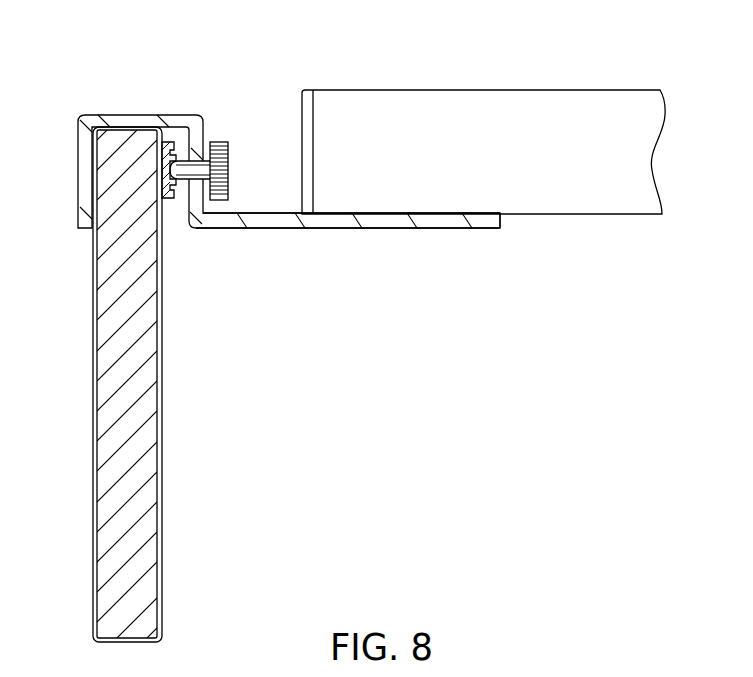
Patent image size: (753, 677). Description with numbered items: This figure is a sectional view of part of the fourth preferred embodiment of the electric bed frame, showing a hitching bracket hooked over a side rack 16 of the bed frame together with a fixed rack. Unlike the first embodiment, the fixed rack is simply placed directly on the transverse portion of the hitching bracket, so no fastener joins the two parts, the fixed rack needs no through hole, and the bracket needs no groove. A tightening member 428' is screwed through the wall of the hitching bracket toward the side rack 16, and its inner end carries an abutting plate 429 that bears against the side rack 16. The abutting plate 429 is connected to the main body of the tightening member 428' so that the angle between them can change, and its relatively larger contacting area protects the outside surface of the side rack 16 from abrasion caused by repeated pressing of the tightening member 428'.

The side rack 16 is at (125, 280).
The abutting plate 429 is at (167, 160).
The tightening member 428' is at (232, 162).